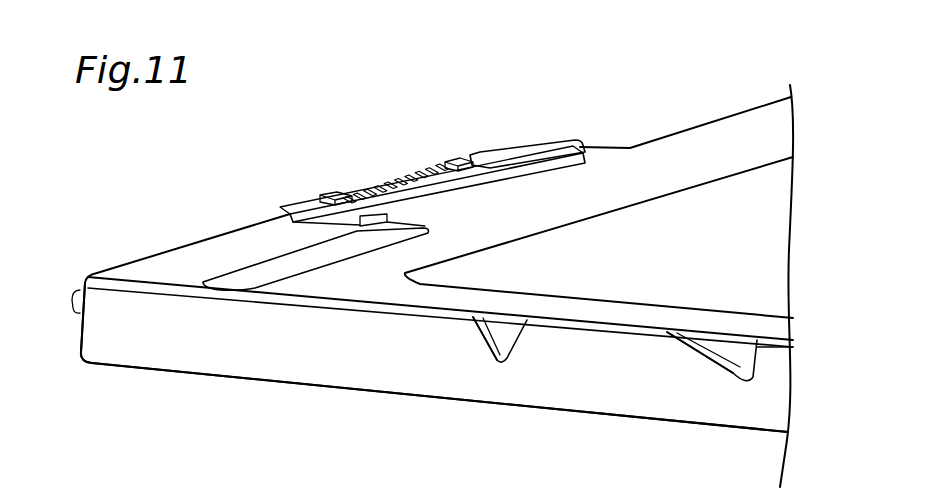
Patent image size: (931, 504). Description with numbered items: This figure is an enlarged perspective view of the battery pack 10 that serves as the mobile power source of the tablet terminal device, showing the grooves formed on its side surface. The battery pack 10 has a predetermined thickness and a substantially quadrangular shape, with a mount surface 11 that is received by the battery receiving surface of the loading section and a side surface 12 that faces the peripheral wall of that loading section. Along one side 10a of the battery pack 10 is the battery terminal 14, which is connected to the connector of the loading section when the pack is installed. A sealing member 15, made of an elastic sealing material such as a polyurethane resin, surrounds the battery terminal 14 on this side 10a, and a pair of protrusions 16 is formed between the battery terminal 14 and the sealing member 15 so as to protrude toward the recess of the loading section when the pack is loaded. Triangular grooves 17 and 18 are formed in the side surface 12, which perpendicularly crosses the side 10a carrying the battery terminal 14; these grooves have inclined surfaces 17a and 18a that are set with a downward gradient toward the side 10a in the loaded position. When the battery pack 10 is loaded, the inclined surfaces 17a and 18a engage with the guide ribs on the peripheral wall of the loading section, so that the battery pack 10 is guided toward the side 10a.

The battery pack 10 is at (677, 131).
The one side of the battery pack 10a is at (233, 231).
The mount surface 11 is at (758, 230).
The side surface 12 is at (317, 363).
The battery terminal 14 is at (400, 180).
The sealing member 15 is at (533, 157).
The protrusions 16 is at (333, 197).
The triangular groove 17 is at (507, 333).
The inclined surface 17a is at (485, 340).
The triangular groove 18 is at (743, 357).
The inclined surface 18a is at (718, 365).